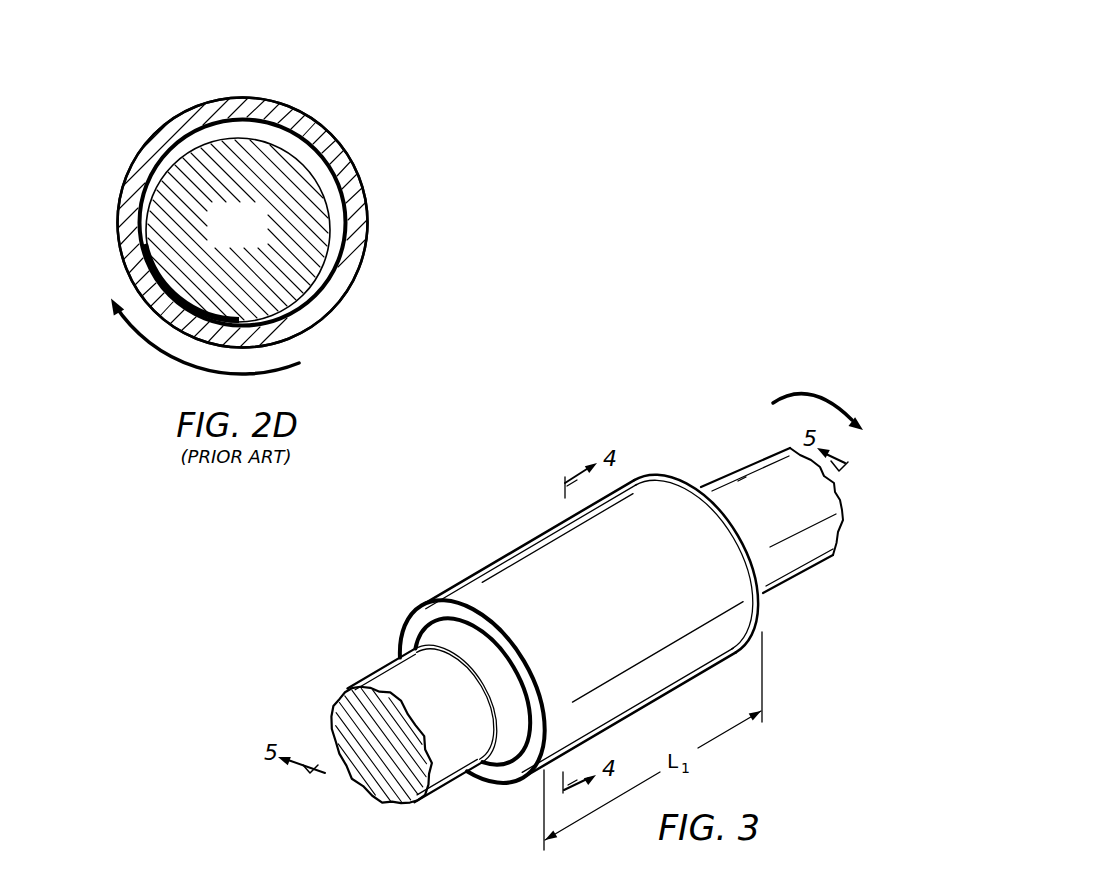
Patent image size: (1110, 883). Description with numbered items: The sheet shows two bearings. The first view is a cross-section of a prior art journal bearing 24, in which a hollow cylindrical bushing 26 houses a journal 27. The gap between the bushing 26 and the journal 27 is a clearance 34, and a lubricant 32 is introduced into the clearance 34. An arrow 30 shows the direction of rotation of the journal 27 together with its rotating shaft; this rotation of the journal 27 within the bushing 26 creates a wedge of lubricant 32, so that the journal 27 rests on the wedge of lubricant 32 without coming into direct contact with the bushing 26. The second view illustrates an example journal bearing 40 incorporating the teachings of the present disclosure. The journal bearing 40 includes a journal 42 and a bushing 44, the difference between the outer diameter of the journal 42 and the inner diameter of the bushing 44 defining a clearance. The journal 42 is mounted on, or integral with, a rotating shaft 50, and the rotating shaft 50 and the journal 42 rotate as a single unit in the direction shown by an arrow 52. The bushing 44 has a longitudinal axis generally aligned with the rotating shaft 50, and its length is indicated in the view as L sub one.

In FIG. 2D, the journal bearing 24 is at (101, 135).
In FIG. 2D, the bushing 26 is at (309, 106).
In FIG. 2D, the journal 27 is at (225, 238).
In FIG. 2D, the arrow 30 is at (155, 357).
In FIG. 2D, the lubricant 32 is at (140, 253).
In FIG. 2D, the clearance 34 is at (217, 132).
In FIG. 3, the journal bearing 40 is at (504, 475).
In FIG. 3, the journal 42 is at (505, 785).
In FIG. 3, the bushing 44 is at (499, 559).
In FIG. 3, the rotating shaft 50 is at (730, 474).
In FIG. 3, the arrow 52 is at (818, 389).